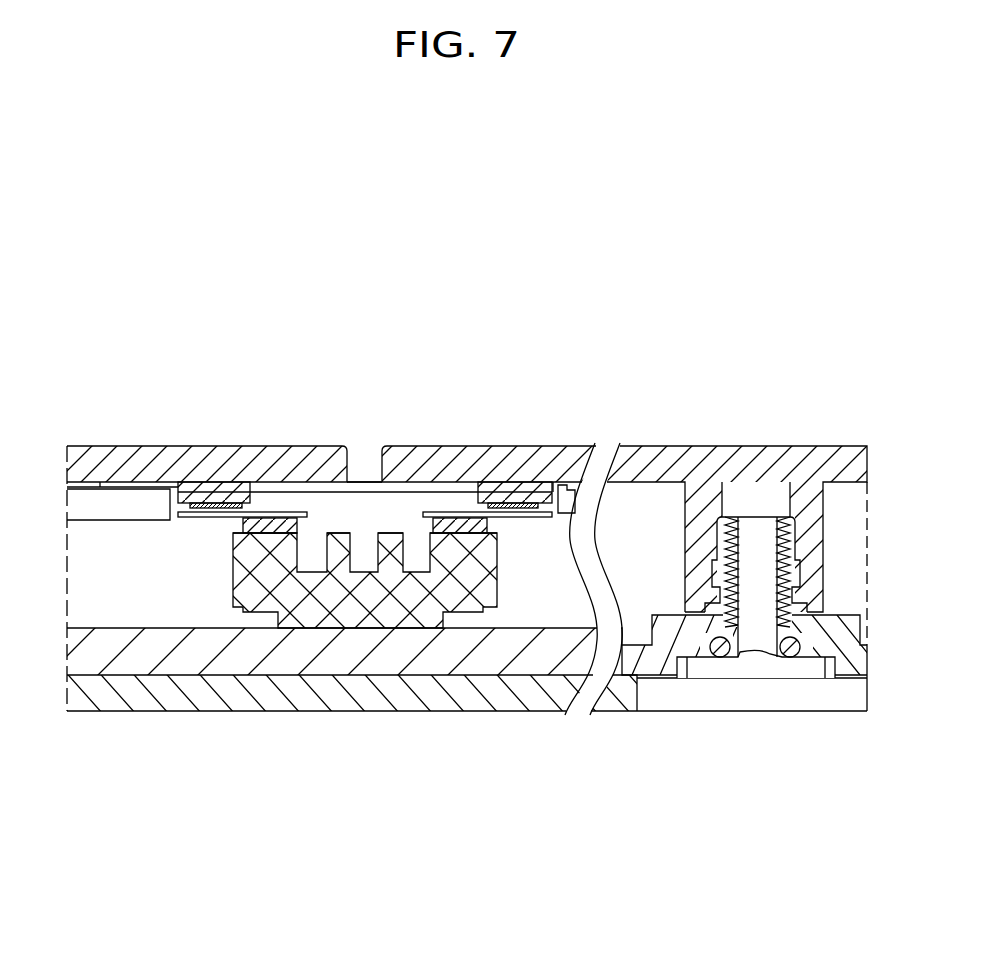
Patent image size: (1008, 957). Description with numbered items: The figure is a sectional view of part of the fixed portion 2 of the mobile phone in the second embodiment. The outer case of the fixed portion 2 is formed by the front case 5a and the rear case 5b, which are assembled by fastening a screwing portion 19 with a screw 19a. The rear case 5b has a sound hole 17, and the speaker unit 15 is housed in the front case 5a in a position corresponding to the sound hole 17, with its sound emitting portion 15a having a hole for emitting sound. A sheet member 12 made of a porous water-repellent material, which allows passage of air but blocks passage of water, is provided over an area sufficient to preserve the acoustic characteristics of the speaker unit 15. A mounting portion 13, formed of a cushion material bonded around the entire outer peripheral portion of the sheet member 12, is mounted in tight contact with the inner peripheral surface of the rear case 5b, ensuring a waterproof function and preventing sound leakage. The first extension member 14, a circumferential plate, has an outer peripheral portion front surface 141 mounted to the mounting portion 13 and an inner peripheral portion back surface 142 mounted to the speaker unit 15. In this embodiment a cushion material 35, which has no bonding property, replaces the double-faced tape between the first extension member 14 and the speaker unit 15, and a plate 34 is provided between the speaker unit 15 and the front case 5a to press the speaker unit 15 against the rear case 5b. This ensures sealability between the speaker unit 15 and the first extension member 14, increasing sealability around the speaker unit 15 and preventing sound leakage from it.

The fixed portion 2 is at (128, 437).
The front case 5a is at (398, 714).
The rear case 5b is at (570, 520).
The sheet member 12 is at (362, 485).
The mounting portion 13 is at (243, 505).
The first extension member 14 is at (178, 518).
The outer peripheral portion front surface 141 is at (222, 490).
The inner peripheral portion back surface 142 is at (243, 515).
The speaker unit 15 is at (443, 613).
The sound emitting portion 15a is at (363, 533).
The sound hole 17 is at (357, 492).
The screwing portion 19 is at (805, 612).
The screw 19a is at (728, 678).
The plate 34 is at (143, 660).
The cushion material 35 is at (280, 530).